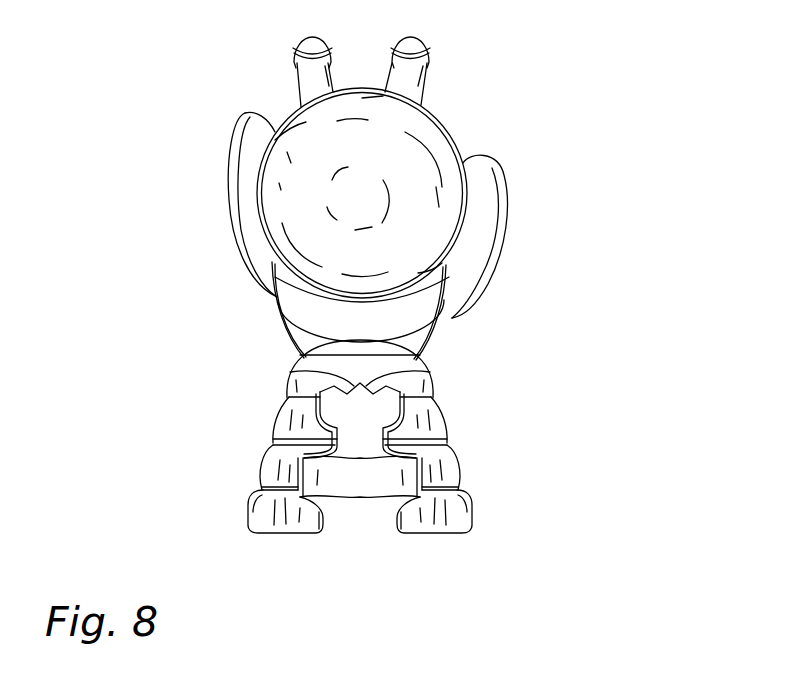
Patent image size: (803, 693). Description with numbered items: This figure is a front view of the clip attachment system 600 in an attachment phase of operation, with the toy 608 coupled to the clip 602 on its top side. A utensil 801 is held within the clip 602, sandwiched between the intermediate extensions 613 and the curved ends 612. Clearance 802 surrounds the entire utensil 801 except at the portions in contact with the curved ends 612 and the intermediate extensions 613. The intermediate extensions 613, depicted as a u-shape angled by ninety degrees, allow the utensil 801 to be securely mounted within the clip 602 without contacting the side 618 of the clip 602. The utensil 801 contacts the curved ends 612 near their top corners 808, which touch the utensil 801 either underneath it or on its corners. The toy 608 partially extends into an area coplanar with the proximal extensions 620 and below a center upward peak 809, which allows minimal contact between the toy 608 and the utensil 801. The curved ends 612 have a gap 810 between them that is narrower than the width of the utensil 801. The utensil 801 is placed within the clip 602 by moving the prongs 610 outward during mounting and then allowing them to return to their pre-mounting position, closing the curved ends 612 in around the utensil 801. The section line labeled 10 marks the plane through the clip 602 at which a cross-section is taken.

The clip attachment system 600 is at (158, 124).
The toy 608 is at (595, 177).
The clip 602 is at (588, 411).
The section line 10- 10 is at (195, 442).
The proximal extensions 620 is at (418, 377).
The center upward peak 809 is at (312, 372).
The side 618 is at (448, 422).
The intermediate extensions 613 is at (388, 432).
The clearance 802 is at (422, 495).
The utensil 801 is at (357, 500).
The top corners 808 is at (337, 500).
The prongs 610 is at (279, 537).
The gap 810 is at (322, 540).
The curved ends 612 is at (407, 524).